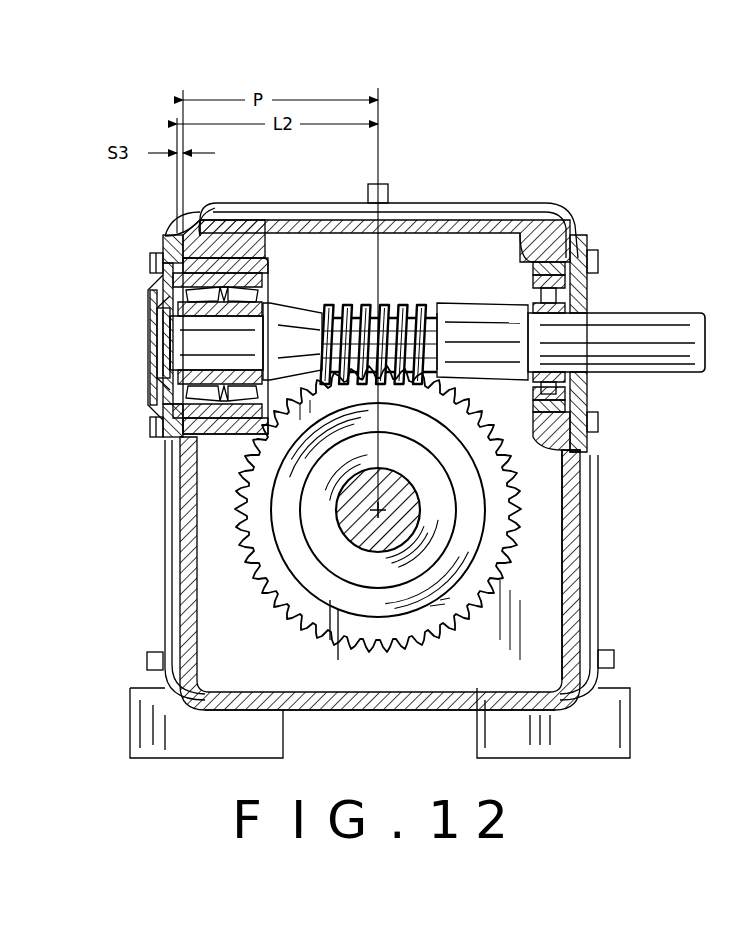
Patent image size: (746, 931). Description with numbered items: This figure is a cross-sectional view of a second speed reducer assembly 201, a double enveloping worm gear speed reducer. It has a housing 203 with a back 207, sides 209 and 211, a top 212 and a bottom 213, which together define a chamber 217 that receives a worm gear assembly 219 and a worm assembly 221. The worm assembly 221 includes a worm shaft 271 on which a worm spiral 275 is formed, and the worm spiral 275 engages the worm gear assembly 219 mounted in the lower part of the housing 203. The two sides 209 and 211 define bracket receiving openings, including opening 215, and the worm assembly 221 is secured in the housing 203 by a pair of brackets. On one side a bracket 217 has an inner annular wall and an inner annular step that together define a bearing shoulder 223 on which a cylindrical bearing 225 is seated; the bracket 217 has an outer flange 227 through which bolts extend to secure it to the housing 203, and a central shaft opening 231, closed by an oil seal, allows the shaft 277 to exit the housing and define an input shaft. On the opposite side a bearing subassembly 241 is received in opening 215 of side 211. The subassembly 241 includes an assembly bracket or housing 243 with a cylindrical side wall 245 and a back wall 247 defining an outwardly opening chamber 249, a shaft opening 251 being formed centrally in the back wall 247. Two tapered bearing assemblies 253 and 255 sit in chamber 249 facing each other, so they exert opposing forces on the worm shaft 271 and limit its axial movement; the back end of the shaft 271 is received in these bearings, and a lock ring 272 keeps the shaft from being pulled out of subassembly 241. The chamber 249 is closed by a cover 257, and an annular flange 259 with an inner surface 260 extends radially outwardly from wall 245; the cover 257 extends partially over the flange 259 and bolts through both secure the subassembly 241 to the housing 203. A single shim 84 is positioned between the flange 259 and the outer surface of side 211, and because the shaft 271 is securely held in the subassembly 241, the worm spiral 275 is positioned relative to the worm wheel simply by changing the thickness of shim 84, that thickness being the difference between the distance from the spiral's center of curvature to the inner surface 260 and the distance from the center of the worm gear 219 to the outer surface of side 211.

The speed reducer assembly 201 is at (598, 225).
The housing 203 is at (600, 502).
The back 207 is at (307, 658).
The side 209 is at (600, 562).
The side 211 is at (176, 488).
The top 212 is at (410, 203).
The bottom 213 is at (520, 270).
The bracket receiving opening 215 is at (232, 258).
The bracket 217 is at (212, 642).
The worm gear assembly 219 is at (500, 572).
The worm assembly 221 is at (320, 278).
The bearing shoulder 223 is at (582, 388).
The cylindrical bearing 225 is at (530, 285).
The outer flange 227 is at (590, 445).
The shaft opening 231 is at (590, 308).
The bearing subassembly 241 is at (160, 445).
The assembly bracket or housing 243 is at (240, 415).
The cylindrical side wall 245 is at (215, 455).
The back wall 247 is at (225, 420).
The outwardly opening chamber 249 is at (188, 206).
The shaft opening 251 is at (283, 300).
The tapered bearing assembly 253 is at (160, 402).
The tapered bearing assembly 255 is at (160, 375).
The cover 257 is at (160, 303).
The annular flange 259 is at (180, 452).
The inner surface 260 is at (195, 468).
The worm shaft 271 is at (378, 303).
The lock ring 272 is at (160, 330).
The worm spiral 275 is at (405, 300).
The shaft 277 is at (706, 342).
The shim 84 is at (170, 215).